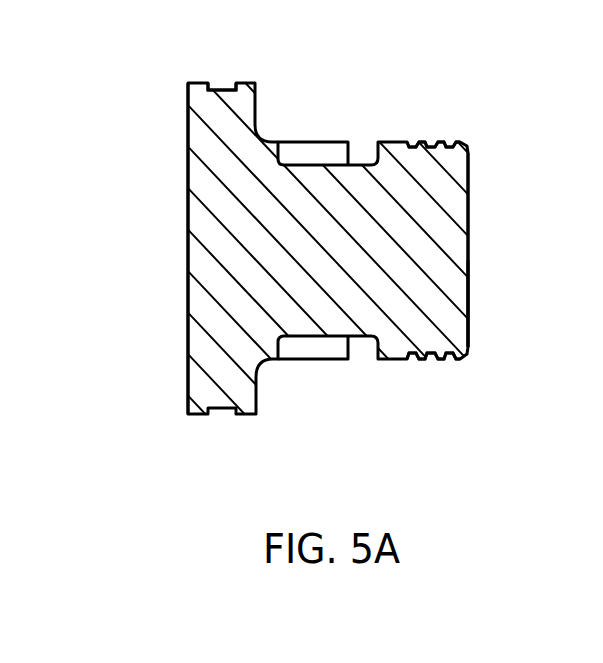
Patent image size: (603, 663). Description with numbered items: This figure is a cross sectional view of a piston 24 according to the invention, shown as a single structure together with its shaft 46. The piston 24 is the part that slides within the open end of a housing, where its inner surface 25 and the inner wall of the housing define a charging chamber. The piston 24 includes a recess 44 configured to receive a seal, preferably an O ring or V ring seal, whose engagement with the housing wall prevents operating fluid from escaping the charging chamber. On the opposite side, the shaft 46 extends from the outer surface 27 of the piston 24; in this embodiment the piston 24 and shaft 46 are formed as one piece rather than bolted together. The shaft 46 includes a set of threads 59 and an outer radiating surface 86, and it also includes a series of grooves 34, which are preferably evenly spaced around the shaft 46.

The piston 24 is at (202, 302).
The inner surface 25 is at (186, 158).
The outer surface 27 is at (258, 106).
The grooves 34 is at (298, 348).
The recess 44 is at (221, 88).
The shaft 46 is at (450, 242).
The threads 59 is at (431, 140).
The outer radiating surface 86 is at (468, 297).